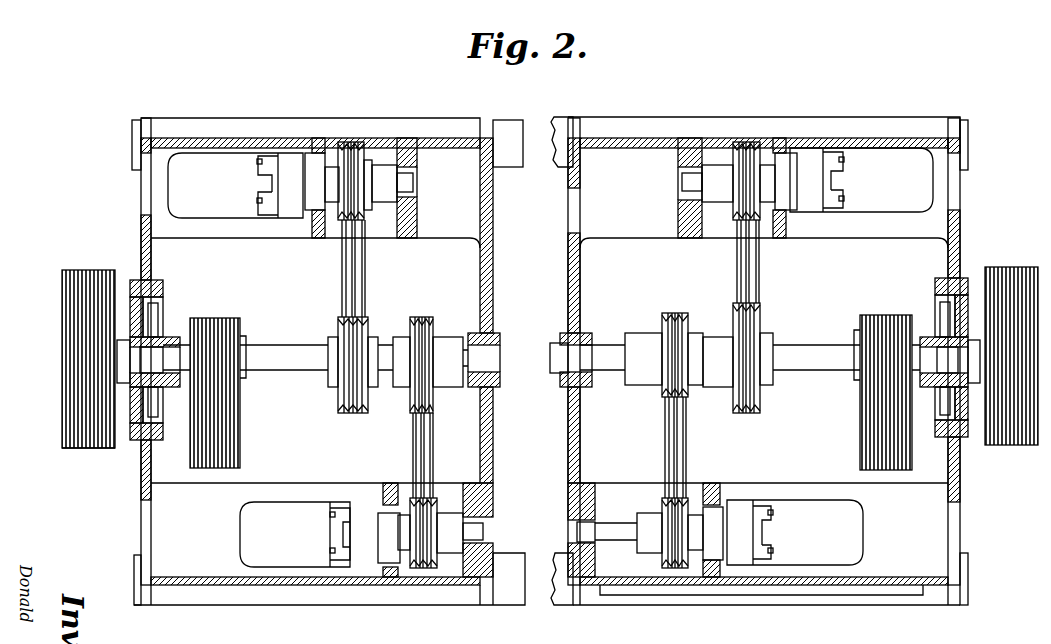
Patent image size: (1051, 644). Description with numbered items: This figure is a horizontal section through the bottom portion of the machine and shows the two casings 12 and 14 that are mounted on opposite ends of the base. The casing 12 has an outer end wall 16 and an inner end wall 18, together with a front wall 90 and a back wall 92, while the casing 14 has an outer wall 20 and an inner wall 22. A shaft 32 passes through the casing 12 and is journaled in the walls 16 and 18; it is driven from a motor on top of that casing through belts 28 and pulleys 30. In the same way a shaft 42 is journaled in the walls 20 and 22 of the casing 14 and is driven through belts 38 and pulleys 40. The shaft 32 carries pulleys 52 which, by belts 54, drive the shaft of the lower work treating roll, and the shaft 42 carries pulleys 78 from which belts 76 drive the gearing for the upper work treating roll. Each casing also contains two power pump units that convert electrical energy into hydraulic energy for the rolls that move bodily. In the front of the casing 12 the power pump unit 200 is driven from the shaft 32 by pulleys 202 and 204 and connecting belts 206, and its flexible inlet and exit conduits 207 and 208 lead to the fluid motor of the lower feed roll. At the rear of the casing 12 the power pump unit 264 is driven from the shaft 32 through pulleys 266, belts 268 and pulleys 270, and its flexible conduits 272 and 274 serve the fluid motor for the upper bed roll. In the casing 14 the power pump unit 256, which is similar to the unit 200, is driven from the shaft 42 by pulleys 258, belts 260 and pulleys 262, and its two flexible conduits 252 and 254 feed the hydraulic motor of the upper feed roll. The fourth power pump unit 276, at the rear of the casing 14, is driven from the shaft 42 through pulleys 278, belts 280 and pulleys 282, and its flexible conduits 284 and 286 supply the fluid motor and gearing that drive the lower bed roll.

The casing 12 is at (126, 159).
The casing 14 is at (980, 178).
The outer end wall 16 is at (146, 262).
The inner end wall 18 is at (493, 300).
The outer wall 20 is at (960, 226).
The inner wall 22 is at (580, 292).
The belts 28 is at (110, 448).
The pulleys 30 is at (62, 385).
The shaft 32 is at (281, 358).
The belts 38 is at (1023, 445).
The pulleys 40 is at (981, 278).
The shaft 42 is at (810, 350).
The pulleys 52 is at (245, 340).
The belts 54 is at (210, 318).
The belts 76 is at (860, 438).
The pulleys 78 is at (860, 317).
The front wall 90 is at (260, 585).
The back wall 92 is at (256, 138).
The power pump unit 200 is at (315, 505).
The pulleys 202 is at (441, 505).
The pulleys 204 is at (437, 388).
The belts 206 is at (417, 428).
The flexible inlet conduit 207 is at (338, 550).
The flexible exit conduit 208 is at (343, 512).
The flexible conduit 252 is at (773, 512).
The flexible conduit 254 is at (773, 546).
The power pump unit 256 is at (862, 528).
The pulleys 258 is at (690, 497).
The belts 260 is at (665, 435).
The pulleys 262 is at (697, 300).
The power pump unit 264 is at (240, 220).
The pulleys 266 is at (368, 315).
The belts 268 is at (366, 270).
The pulleys 270 is at (366, 215).
The flexible conduit 272 is at (260, 165).
The flexible conduit 274 is at (260, 204).
The power pump unit 276 is at (873, 210).
The pulleys 278 is at (760, 320).
The belts 280 is at (752, 252).
The pulleys 282 is at (730, 214).
The flexible conduit 284 is at (843, 163).
The flexible conduit 286 is at (843, 199).